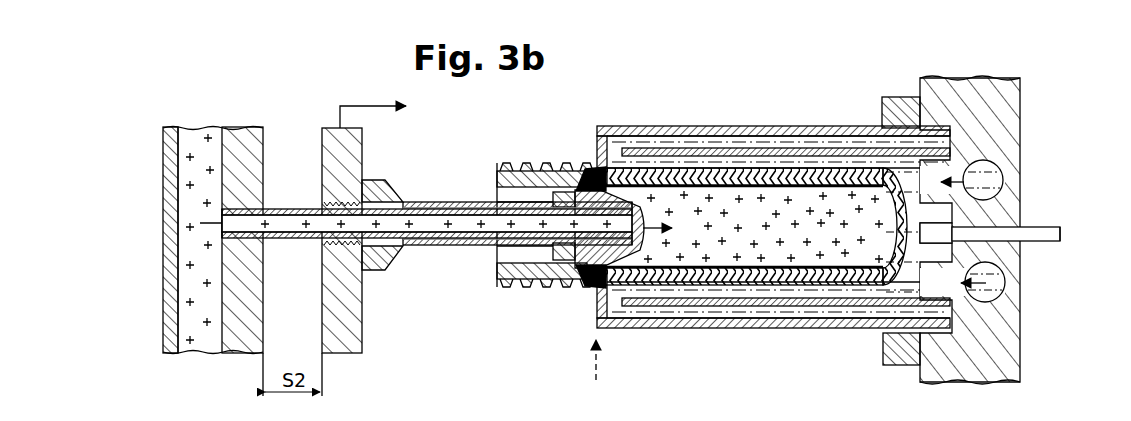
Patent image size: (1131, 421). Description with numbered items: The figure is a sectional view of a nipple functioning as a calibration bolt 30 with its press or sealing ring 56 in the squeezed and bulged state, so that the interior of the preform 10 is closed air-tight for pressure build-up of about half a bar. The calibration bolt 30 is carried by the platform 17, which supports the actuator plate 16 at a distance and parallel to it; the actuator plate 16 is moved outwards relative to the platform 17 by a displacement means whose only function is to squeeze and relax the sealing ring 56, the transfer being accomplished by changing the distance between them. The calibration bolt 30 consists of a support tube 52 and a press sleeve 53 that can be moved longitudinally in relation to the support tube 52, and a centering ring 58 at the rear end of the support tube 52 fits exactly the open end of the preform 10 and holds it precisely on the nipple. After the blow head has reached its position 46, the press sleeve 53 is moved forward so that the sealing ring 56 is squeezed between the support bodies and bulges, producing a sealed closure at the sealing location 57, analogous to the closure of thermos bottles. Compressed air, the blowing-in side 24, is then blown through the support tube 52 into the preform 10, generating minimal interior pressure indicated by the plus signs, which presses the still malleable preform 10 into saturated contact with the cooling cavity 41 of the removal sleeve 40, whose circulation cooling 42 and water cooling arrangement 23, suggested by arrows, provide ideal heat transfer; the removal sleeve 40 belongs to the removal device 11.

The preform 10 is at (726, 186).
The removal device 11 is at (1013, 108).
The actuator plate 16 is at (362, 149).
The platform 17 is at (233, 140).
The water cooling arrangement 23 is at (1005, 176).
The air supply (blowing in) 24 is at (196, 126).
The calibration bolt (nipple) 30 is at (452, 195).
The removal sleeve 40 is at (758, 126).
The cooling cavity 41 is at (772, 268).
The circulation cooling 42 is at (613, 150).
The position of the blow head 46 is at (595, 374).
The support tube 52 is at (283, 238).
The press sleeve 53 is at (472, 248).
The press or sealing ring 56 is at (602, 189).
The sealing location 57 is at (578, 285).
The centering ring 58 is at (378, 272).